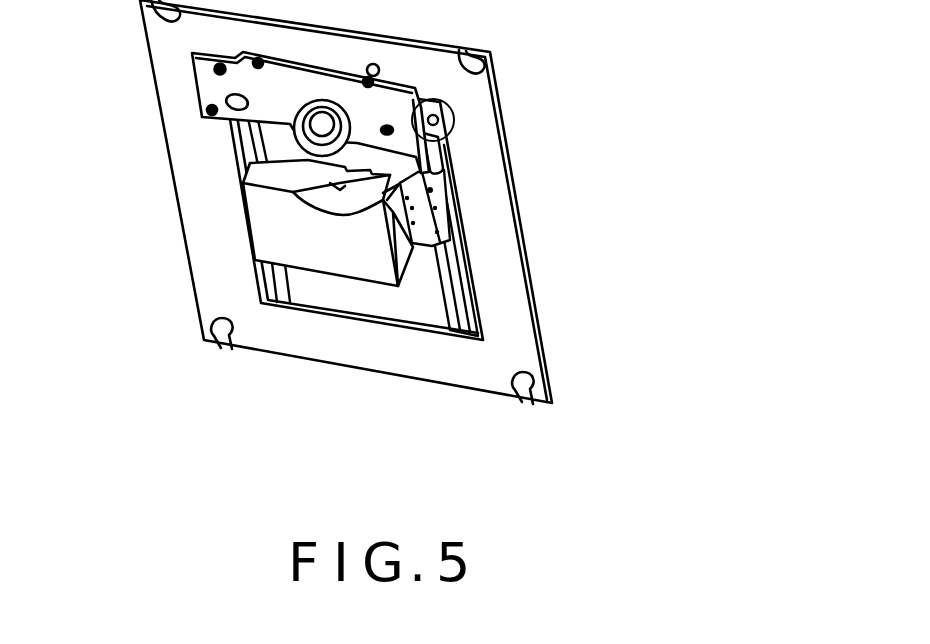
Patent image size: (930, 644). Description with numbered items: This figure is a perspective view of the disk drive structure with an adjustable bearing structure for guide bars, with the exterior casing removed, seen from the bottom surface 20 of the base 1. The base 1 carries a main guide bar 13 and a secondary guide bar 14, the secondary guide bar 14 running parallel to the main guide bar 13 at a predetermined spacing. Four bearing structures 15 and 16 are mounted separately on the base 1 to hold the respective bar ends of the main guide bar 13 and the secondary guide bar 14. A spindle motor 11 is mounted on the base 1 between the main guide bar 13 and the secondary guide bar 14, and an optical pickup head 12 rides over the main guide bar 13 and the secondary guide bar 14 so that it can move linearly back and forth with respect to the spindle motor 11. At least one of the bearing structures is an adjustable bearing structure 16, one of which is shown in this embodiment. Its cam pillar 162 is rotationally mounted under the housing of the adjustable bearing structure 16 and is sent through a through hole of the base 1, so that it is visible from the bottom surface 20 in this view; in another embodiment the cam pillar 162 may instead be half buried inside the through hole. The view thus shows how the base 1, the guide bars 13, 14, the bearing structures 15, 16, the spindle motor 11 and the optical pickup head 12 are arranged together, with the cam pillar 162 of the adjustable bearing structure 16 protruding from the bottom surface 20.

The base 1 is at (508, 302).
The spindle motor 11 is at (317, 125).
The optical pickup head 12 is at (273, 212).
The main guide bar 13 is at (440, 155).
The secondary guide bar 14 is at (278, 283).
The bearing structure 15 is at (423, 330).
The adjustable bearing structure 16 is at (458, 128).
The cam pillar 162 is at (438, 118).
The bottom surface 20 is at (500, 237).